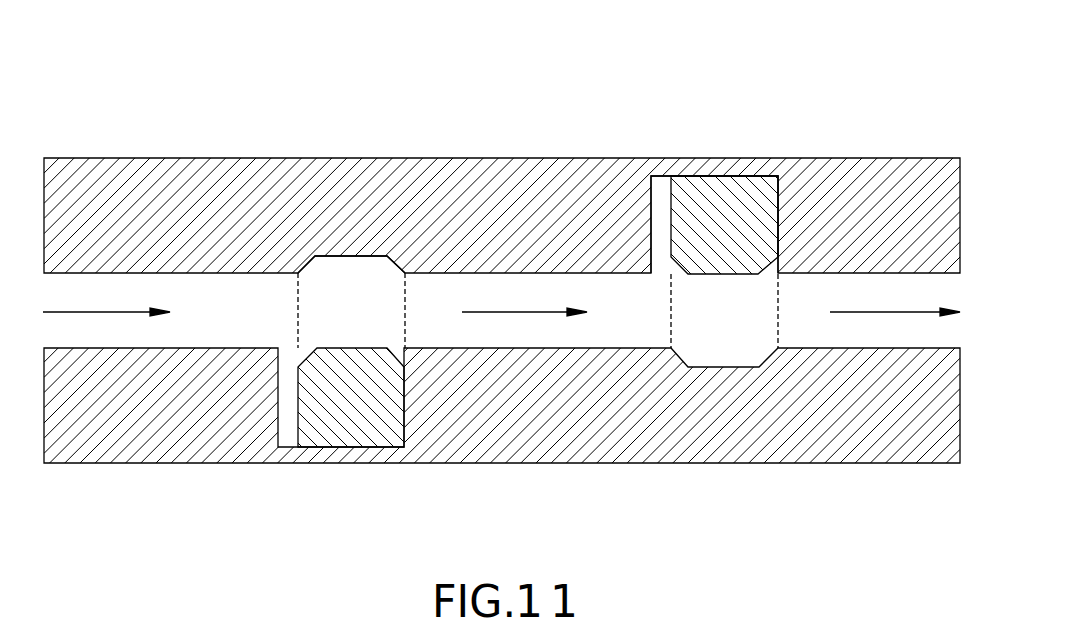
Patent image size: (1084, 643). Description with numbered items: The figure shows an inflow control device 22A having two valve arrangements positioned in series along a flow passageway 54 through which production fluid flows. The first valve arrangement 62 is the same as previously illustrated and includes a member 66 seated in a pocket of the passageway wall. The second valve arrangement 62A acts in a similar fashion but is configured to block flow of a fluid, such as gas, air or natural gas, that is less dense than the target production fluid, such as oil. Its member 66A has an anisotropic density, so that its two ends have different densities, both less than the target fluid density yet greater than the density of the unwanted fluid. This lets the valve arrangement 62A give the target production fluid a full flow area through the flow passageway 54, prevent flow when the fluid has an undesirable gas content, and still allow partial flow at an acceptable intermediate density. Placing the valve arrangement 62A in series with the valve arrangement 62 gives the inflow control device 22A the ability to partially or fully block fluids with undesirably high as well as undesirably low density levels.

The inflow control device 22A is at (466, 470).
The flow passageway 54 is at (232, 326).
The first valve arrangement 62 is at (298, 140).
The second valve arrangement 62A is at (705, 141).
The member 66 is at (328, 419).
The member 66A is at (713, 244).